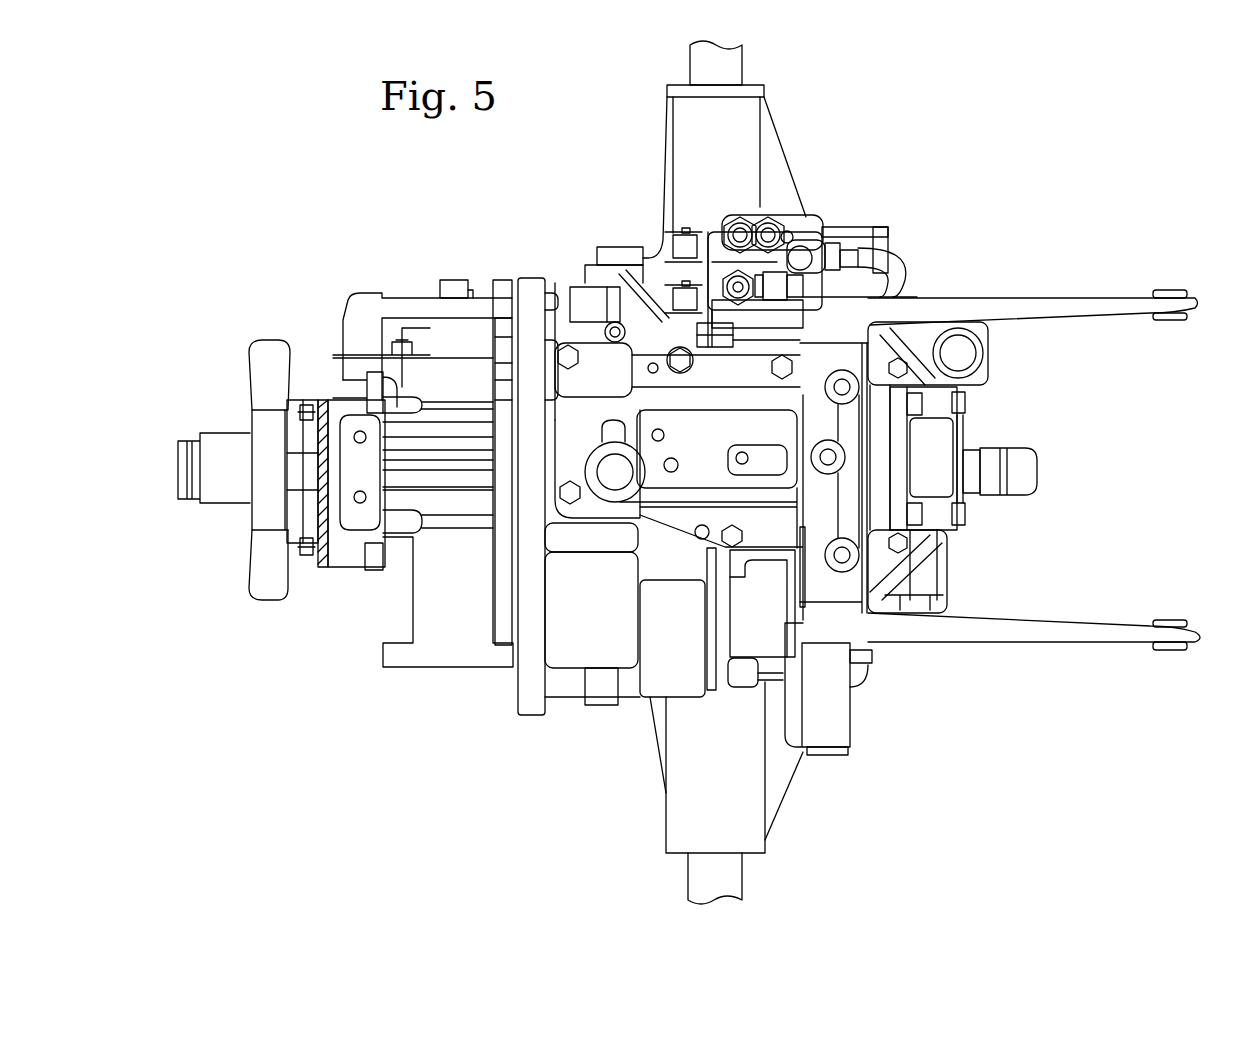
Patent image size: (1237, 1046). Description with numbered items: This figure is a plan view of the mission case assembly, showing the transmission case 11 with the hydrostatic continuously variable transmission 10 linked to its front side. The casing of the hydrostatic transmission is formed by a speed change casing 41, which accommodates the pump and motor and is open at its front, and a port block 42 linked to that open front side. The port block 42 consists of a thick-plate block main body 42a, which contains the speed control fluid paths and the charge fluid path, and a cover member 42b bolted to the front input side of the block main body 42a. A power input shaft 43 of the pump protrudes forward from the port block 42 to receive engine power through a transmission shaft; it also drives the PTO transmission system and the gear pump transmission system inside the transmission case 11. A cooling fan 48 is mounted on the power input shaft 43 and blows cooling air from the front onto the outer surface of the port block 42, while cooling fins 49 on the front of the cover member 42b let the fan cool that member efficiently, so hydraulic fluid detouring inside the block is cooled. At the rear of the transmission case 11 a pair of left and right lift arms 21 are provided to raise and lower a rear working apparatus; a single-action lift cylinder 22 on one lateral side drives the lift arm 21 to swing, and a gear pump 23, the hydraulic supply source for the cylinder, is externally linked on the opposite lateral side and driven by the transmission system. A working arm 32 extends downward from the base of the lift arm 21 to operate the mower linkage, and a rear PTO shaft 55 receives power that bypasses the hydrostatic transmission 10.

The hydrostatic continuously variable transmission 10 is at (436, 362).
The transmission case 11 is at (642, 690).
The lift arm 21 is at (1073, 300).
The lift cylinder 22 is at (940, 432).
The gear pump 23 is at (758, 660).
The working arm 32 is at (835, 758).
The speed change casing 41 is at (443, 522).
The port block 42 is at (317, 548).
The block main body 42a is at (352, 568).
The cover member 42b is at (323, 568).
The power input shaft 43 is at (218, 505).
The cooling fan 48 is at (266, 340).
The cooling fins 49 is at (300, 410).
The rear PTO shaft 55 is at (1035, 470).